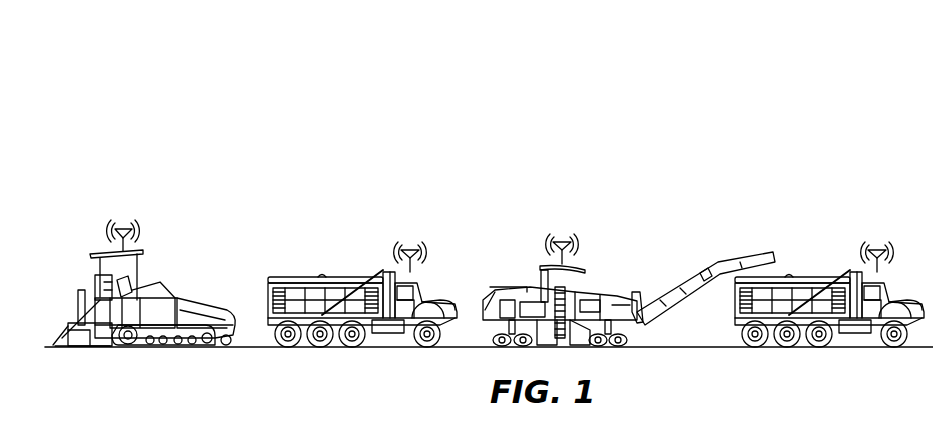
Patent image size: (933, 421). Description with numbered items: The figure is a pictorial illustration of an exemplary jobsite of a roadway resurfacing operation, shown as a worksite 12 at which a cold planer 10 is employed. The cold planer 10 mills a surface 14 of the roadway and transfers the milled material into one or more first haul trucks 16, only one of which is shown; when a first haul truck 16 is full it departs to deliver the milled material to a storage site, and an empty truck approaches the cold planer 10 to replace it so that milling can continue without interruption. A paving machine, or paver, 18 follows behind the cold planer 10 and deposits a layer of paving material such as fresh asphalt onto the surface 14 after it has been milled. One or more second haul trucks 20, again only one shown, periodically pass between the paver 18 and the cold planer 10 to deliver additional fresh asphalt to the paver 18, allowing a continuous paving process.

The cold planer 10 is at (542, 196).
The worksite 12 is at (367, 21).
The surface 14 is at (697, 349).
The first haul truck 16 is at (343, 196).
The paving machine 18 is at (142, 196).
The second haul truck 20 is at (815, 196).